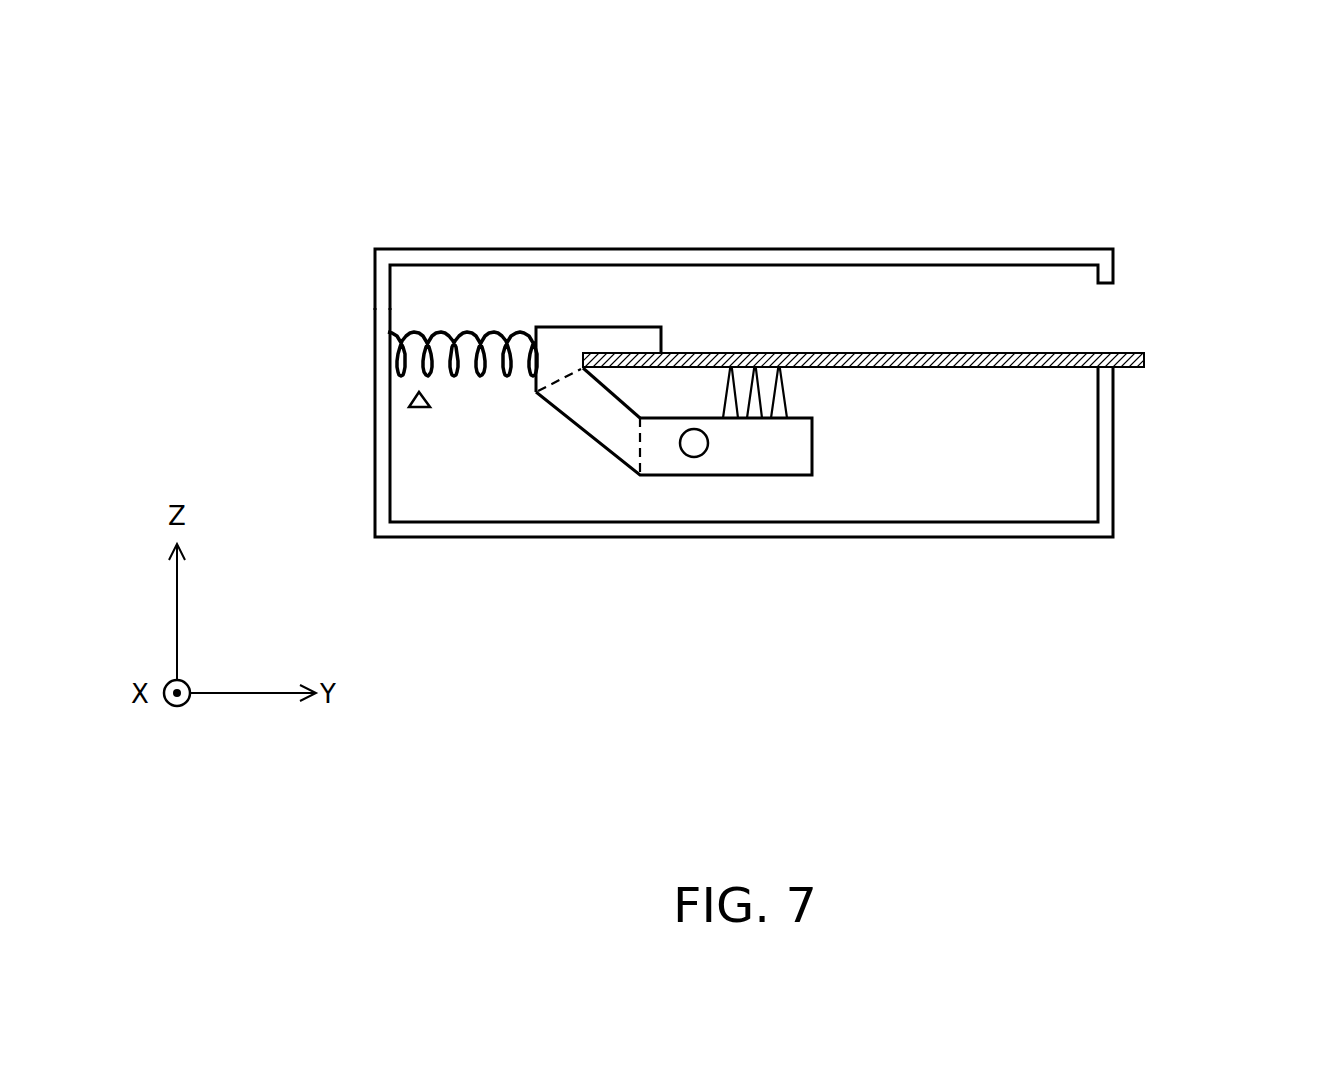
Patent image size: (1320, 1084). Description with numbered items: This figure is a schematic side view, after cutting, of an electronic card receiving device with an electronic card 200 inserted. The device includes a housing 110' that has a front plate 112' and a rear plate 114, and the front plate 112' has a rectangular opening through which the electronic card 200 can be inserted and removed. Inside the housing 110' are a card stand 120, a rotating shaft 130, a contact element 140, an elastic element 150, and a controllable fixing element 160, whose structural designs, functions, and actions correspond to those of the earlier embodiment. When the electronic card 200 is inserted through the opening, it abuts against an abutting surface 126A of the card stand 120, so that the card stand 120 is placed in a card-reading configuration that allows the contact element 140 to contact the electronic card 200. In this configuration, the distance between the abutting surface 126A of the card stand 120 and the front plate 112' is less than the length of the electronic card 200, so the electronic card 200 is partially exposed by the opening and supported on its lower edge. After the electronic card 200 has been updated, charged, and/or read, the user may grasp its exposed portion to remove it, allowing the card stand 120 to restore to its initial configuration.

The housing 110' is at (774, 307).
The front plate 112' is at (798, 422).
The rear plate 114 is at (375, 297).
The card stand 120 is at (573, 440).
The abutting surface 126A is at (580, 364).
The rotating shaft 130 is at (700, 442).
The contact element 140 is at (780, 397).
The elastic element 150 is at (463, 333).
The controllable fixing element 160 is at (419, 418).
The electronic card 200 is at (1050, 358).